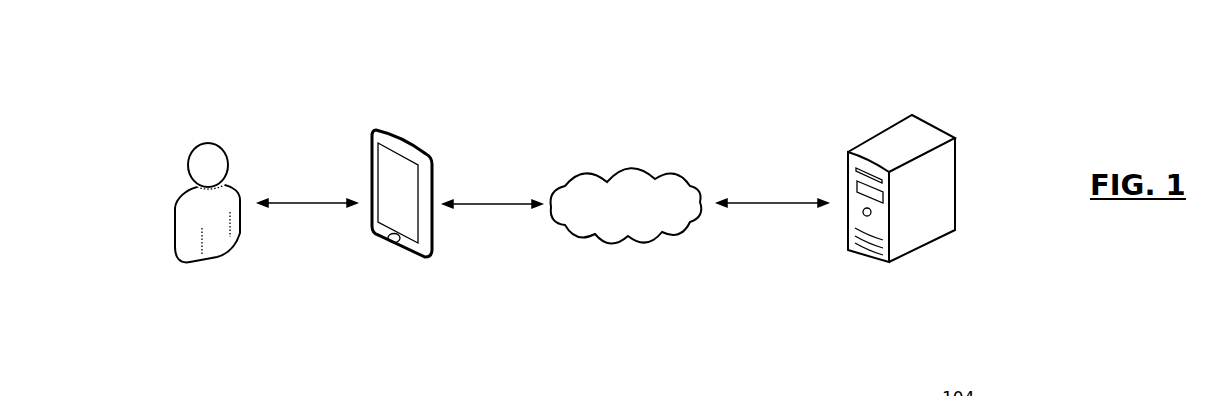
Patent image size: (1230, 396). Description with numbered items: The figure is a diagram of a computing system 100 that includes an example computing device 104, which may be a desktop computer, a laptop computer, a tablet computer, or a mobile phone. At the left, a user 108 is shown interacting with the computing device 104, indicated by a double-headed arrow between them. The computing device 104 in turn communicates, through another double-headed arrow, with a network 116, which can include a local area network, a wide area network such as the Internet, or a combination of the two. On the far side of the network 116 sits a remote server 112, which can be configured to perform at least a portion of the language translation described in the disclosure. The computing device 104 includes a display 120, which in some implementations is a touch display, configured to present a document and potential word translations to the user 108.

The computing system 100 is at (1020, 59).
The computing device 104 is at (431, 204).
The user 108 is at (208, 143).
The remote server 112 is at (870, 138).
The network 116 is at (628, 170).
The display 120 is at (397, 168).